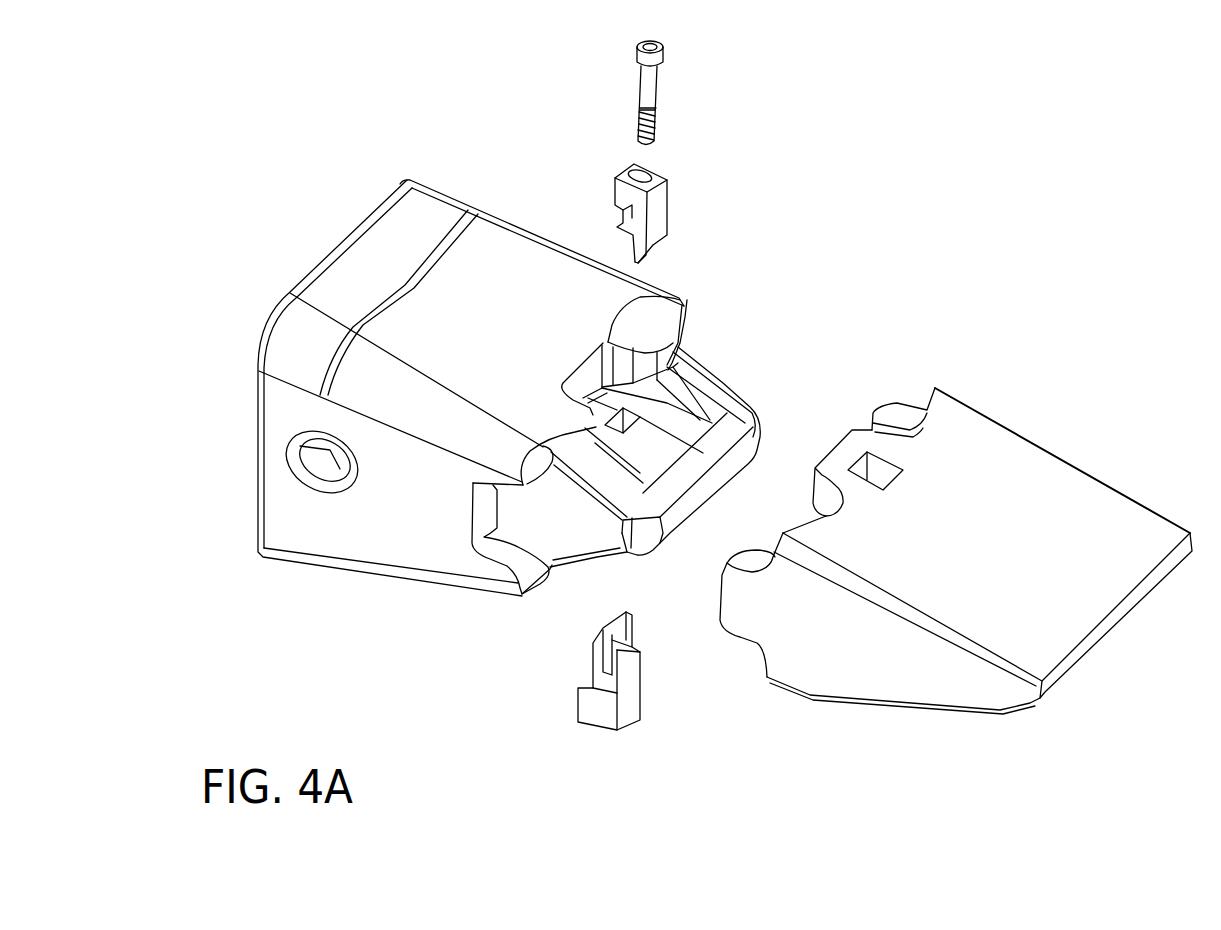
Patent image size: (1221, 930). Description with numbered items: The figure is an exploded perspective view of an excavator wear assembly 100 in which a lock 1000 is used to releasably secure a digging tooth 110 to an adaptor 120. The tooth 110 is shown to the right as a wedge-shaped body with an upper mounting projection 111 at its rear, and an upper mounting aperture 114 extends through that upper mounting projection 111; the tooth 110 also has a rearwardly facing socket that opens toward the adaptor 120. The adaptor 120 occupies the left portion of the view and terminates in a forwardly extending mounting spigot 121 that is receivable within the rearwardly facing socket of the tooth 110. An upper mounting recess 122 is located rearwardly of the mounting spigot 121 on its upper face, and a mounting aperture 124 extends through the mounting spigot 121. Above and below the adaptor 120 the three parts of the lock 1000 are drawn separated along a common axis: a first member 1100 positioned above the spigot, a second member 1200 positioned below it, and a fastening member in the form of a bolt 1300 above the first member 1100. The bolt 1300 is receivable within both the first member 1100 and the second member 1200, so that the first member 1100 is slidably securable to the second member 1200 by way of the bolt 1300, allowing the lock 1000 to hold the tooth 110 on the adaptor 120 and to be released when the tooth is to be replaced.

The lock 1000 is at (782, 162).
The excavator wear assembly 100 is at (963, 316).
The digging tooth 110 is at (1126, 481).
The upper mounting projection 111 is at (855, 430).
The upper mounting aperture 114 is at (895, 463).
The adaptor 120 is at (323, 608).
The mounting spigot 121 is at (728, 395).
The upper mounting recess 122 is at (678, 297).
The mounting aperture 124 is at (683, 367).
The first member 1100 is at (582, 190).
The second member 1200 is at (560, 713).
The bolt 1300 is at (684, 98).